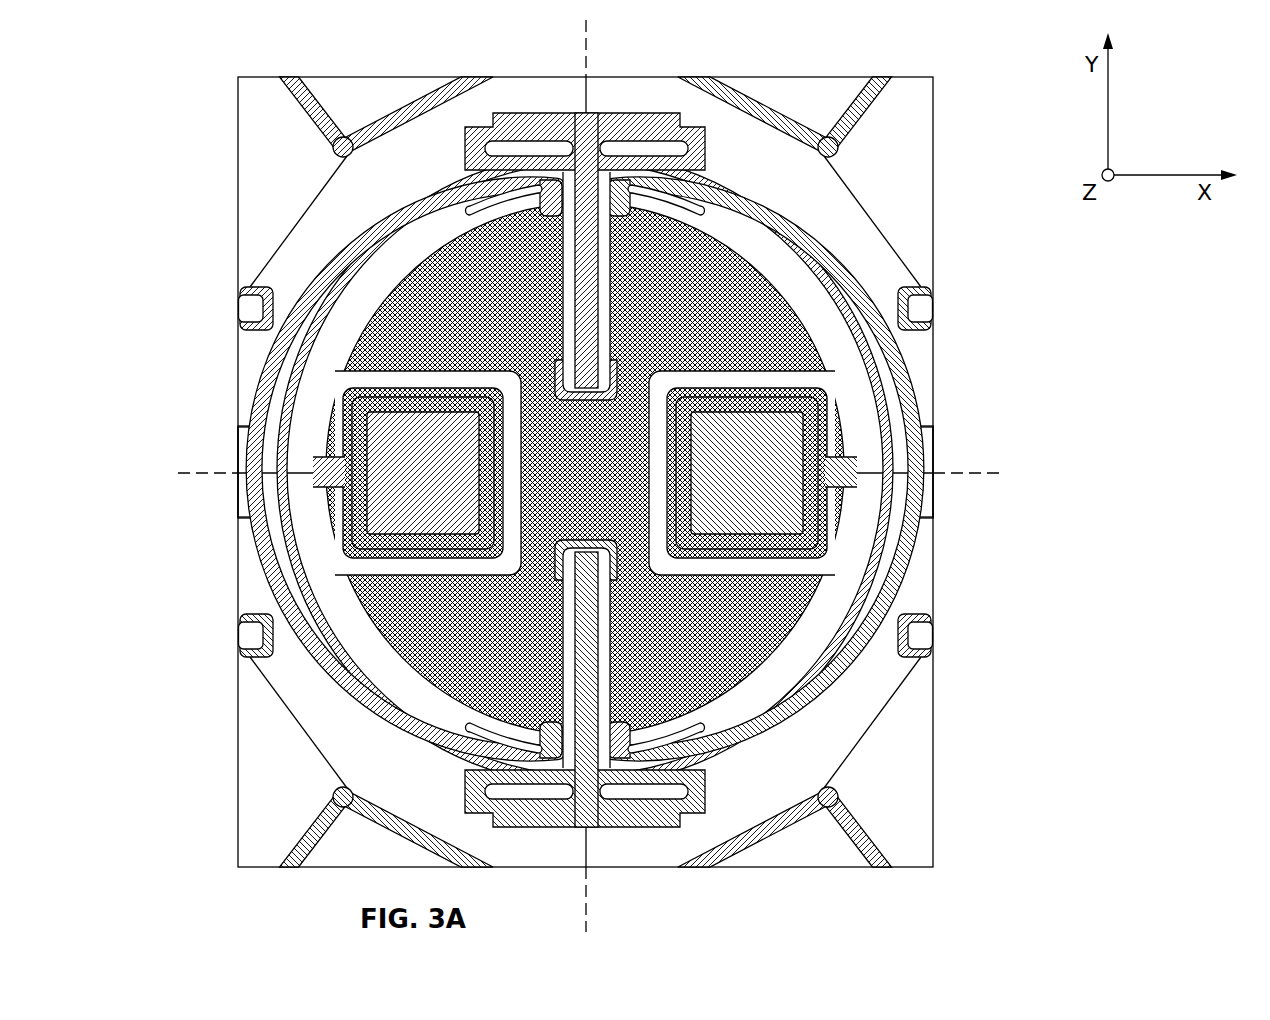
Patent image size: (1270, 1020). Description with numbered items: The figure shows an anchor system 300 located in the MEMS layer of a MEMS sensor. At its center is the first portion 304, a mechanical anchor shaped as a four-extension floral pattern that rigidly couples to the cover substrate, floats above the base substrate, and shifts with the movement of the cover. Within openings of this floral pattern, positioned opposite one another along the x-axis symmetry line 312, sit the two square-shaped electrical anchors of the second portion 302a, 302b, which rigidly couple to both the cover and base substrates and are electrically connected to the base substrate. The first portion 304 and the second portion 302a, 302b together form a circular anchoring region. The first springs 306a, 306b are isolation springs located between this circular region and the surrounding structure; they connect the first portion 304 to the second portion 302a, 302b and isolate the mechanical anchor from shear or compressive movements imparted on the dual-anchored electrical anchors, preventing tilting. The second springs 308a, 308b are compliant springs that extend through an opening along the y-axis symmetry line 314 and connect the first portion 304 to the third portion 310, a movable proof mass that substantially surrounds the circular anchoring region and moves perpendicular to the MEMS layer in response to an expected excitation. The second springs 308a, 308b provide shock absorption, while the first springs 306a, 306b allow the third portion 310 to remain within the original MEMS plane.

The anchor system 300 is at (190, 62).
The second portion 302a is at (453, 507).
The second portion 302b is at (781, 507).
The first portion 304 is at (708, 325).
The first spring 306a is at (363, 290).
The first spring 306b is at (862, 552).
The second spring 308a is at (592, 274).
The second spring 308b is at (598, 632).
The third portion 310 is at (304, 770).
The x-axis symmetry line 312 is at (963, 473).
The y-axis symmetry line 314 is at (586, 43).